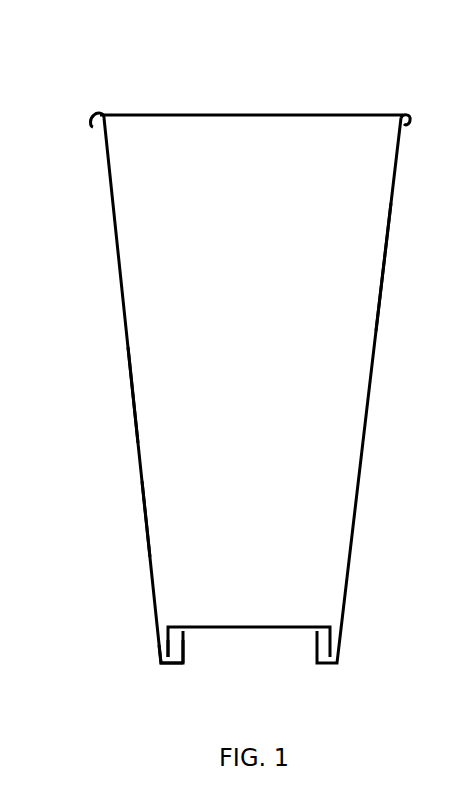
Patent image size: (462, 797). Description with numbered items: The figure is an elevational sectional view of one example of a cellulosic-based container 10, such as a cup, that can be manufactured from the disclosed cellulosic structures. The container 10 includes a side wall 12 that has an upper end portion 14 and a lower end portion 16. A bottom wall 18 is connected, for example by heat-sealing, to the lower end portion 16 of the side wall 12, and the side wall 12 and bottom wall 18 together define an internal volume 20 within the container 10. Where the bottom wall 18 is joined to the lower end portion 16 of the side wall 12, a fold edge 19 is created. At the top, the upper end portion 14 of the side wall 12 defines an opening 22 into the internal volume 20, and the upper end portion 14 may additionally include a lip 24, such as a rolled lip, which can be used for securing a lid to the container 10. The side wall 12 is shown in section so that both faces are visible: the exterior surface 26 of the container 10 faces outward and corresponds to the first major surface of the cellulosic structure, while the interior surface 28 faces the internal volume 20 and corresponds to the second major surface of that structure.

The container 10 is at (150, 72).
The side wall 12 is at (370, 372).
The upper end portion 14 is at (86, 120).
The lower end portion 16 is at (137, 674).
The bottom wall 18 is at (250, 630).
The fold edge 19 is at (174, 658).
The internal volume 20 is at (360, 265).
The opening 22 is at (260, 108).
The lip 24 is at (406, 120).
The exterior surface 26 is at (134, 392).
The interior surface 28 is at (154, 512).